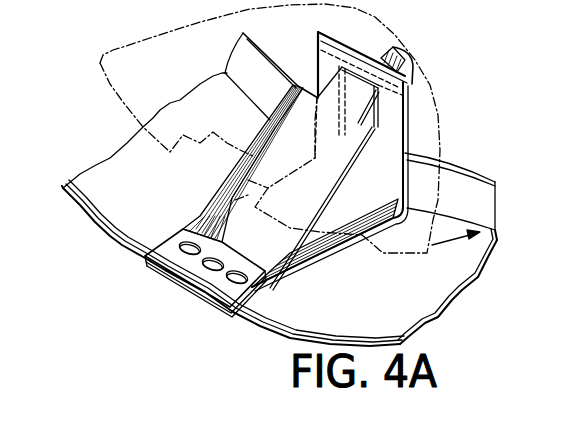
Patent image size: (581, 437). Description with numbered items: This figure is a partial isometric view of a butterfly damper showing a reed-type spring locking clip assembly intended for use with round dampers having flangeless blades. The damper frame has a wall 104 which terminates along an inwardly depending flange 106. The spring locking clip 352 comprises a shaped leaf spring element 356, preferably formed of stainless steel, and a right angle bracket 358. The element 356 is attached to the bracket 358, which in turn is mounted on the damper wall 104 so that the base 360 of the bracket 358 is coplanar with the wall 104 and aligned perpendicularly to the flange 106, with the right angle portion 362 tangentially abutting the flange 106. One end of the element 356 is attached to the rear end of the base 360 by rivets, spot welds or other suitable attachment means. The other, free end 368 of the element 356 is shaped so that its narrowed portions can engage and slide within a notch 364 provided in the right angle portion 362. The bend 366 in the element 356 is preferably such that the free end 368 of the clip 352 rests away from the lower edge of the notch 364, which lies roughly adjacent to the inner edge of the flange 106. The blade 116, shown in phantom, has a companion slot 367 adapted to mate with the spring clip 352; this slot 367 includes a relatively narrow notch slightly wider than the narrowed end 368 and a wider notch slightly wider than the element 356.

The wall 104 is at (430, 293).
The flange 106 is at (489, 200).
The blade 116 is at (119, 106).
The spring locking clip 352 is at (328, 288).
The leaf spring element 356 is at (235, 206).
The right angle bracket 358 is at (358, 230).
The base 360 is at (320, 253).
The right angle portion 362 is at (395, 112).
The notch 364 is at (385, 115).
The bend 366 is at (265, 296).
The slot 367 is at (212, 160).
The free end 368 is at (393, 55).